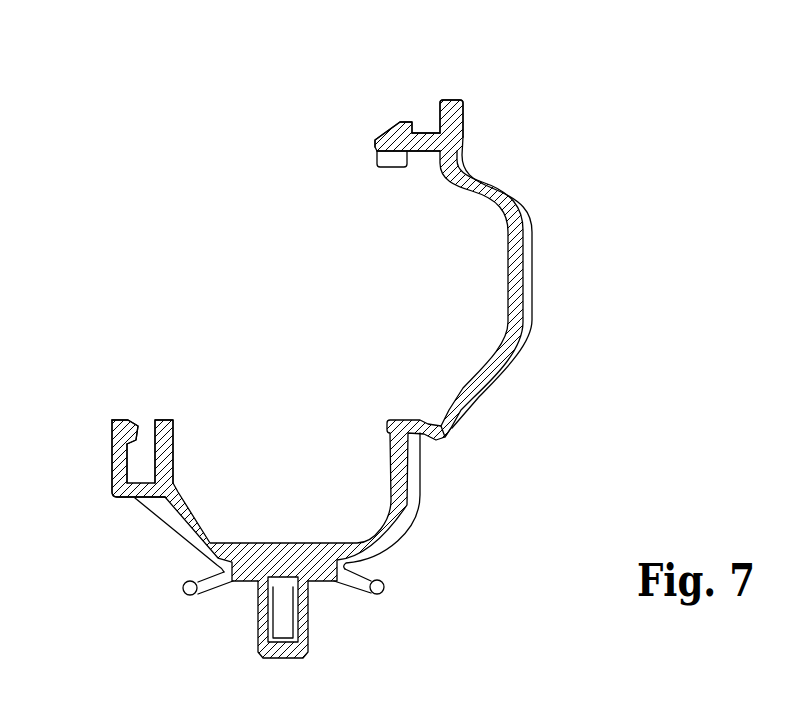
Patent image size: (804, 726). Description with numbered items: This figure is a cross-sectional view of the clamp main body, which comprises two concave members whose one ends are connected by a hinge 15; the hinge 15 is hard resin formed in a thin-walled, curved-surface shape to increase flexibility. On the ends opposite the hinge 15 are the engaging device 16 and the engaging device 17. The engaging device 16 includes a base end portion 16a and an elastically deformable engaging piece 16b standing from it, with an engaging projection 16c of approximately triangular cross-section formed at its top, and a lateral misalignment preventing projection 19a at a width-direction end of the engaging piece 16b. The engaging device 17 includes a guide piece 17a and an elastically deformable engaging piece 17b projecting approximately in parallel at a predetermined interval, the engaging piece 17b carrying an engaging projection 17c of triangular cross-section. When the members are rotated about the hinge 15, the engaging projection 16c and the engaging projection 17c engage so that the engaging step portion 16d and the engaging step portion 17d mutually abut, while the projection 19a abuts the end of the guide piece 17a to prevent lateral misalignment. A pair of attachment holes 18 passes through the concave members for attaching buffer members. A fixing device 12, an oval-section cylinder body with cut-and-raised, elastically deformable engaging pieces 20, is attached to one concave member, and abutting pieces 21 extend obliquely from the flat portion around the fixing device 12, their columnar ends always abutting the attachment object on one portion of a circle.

The fixing device 12 is at (308, 630).
The hinge 15 is at (442, 434).
The engaging device 16 is at (422, 108).
The base end portion 16a is at (448, 100).
The engaging piece 16b is at (417, 155).
The engaging projection 16c is at (395, 130).
The engaging step portion 16d is at (418, 125).
The engaging device 17 is at (143, 408).
The guide piece 17a is at (168, 423).
The engaging piece 17b is at (112, 458).
The engaging projection 17c is at (120, 425).
The engaging step portion 17d is at (133, 452).
The attachment hole 18 is at (490, 187).
The lateral misalignment preventing projection 19a is at (387, 155).
The engaging piece 20 is at (285, 607).
The abutting piece 21 is at (183, 584).